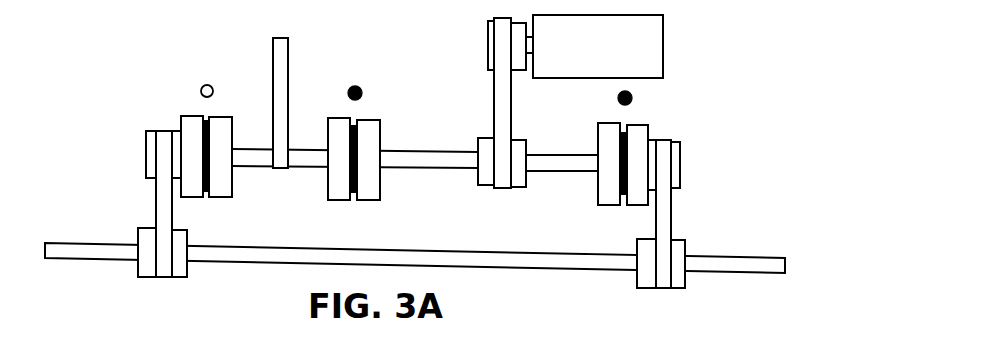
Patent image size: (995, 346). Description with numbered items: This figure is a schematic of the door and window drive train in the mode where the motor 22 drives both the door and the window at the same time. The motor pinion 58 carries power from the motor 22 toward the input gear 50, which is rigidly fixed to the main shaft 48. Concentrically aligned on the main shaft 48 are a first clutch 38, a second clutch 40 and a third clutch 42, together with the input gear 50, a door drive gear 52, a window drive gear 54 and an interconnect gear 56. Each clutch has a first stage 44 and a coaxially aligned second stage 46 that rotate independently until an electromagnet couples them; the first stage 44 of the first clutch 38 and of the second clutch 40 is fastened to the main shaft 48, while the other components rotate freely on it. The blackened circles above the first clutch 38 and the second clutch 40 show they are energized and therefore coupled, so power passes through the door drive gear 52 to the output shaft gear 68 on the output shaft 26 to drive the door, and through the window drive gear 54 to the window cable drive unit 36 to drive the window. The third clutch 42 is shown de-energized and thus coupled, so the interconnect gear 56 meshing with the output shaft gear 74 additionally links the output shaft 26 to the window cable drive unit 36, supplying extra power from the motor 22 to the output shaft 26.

The motor 22 is at (598, 46).
The output shaft 26 is at (522, 260).
The window cable drive unit 36 is at (282, 38).
The first clutch 38 is at (623, 121).
The second clutch 40 is at (353, 117).
The third clutch 42 is at (203, 114).
The first stage 44 is at (192, 195).
The second stage 46 is at (222, 195).
The main shaft 48 is at (430, 159).
The input gear 50 is at (483, 185).
The door drive gear 52 is at (680, 154).
The window drive gear 54 is at (281, 168).
The interconnect gear 56 is at (146, 155).
The motor pinion 58 is at (490, 35).
The output shaft gear 68 is at (677, 284).
The output shaft gear 74 is at (143, 275).